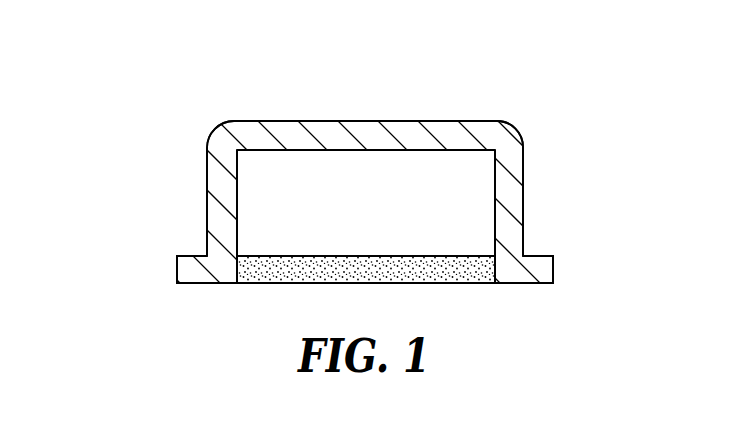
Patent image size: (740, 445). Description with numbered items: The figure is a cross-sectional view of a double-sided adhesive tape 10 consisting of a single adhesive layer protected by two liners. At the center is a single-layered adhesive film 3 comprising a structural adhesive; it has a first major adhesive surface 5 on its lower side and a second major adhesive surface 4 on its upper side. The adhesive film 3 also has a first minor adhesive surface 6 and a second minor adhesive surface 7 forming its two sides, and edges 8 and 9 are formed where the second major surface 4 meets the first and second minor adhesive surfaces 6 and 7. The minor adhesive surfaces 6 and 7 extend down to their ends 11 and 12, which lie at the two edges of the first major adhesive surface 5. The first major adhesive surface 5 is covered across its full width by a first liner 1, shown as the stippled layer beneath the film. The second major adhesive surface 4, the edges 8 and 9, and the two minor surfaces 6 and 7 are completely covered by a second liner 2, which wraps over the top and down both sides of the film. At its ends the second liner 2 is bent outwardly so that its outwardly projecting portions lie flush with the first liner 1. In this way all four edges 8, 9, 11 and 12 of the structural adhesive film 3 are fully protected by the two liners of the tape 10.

The tape 10 is at (176, 101).
The first liner 1 is at (453, 275).
The second liner 2 is at (415, 133).
The adhesive film 3 is at (462, 194).
The second major adhesive surface 4 is at (348, 147).
The first major adhesive surface 5 is at (283, 257).
The first minor adhesive surface 6 is at (232, 187).
The second minor adhesive surface 7 is at (495, 162).
The edge 8 is at (218, 122).
The edge 9 is at (516, 140).
The end 11 is at (237, 257).
The end 12 is at (497, 261).